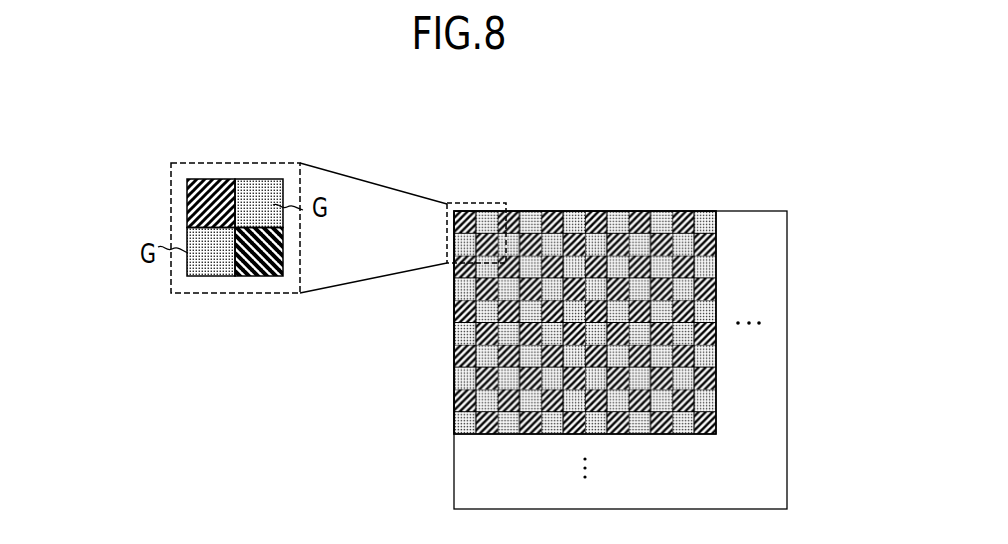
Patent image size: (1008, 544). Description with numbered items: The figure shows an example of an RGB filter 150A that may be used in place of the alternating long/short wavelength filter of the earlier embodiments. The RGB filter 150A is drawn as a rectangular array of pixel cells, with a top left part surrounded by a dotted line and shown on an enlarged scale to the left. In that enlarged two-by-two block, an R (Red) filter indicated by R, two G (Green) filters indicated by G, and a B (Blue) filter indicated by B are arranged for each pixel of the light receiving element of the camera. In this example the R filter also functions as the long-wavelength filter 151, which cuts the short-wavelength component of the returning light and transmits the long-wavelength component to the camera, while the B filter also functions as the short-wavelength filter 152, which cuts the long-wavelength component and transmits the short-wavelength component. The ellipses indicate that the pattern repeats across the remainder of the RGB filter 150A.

The RGB filter 150A is at (790, 153).
The long-wavelength filter 151 is at (187, 210).
The short-wavelength filter 152 is at (280, 247).